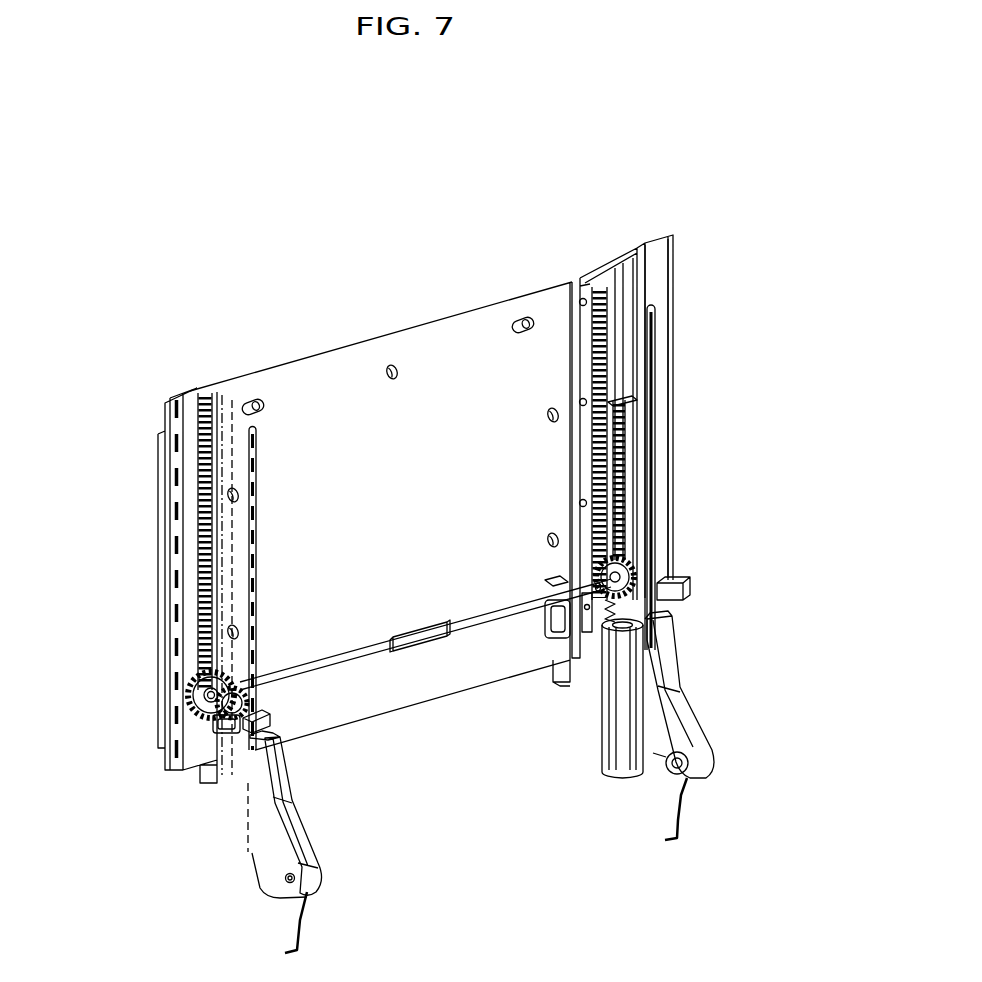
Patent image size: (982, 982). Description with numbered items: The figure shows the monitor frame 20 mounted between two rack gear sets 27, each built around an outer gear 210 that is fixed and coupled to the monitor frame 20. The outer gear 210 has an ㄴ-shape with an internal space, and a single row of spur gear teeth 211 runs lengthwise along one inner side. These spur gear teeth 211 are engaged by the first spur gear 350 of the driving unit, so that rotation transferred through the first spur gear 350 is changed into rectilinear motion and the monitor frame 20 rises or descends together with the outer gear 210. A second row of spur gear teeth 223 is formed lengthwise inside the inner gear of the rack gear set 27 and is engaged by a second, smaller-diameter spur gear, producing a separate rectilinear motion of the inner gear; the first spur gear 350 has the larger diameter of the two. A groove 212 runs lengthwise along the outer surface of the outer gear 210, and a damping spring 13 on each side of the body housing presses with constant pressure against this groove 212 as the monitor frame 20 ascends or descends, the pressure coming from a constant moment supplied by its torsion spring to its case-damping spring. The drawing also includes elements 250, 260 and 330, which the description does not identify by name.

The monitor frame 20 is at (482, 320).
The rack gear set 27 is at (690, 220).
The outer gear 210 is at (660, 268).
The spur gear teeth 211 is at (590, 280).
The groove 212 is at (652, 382).
The spur gear teeth 223 is at (620, 422).
The bracket 250 is at (217, 716).
The pinion gear 260 is at (205, 693).
The drive shaft 330 is at (463, 630).
The first spur gear 350 is at (632, 556).
The damping spring 13 is at (712, 660).